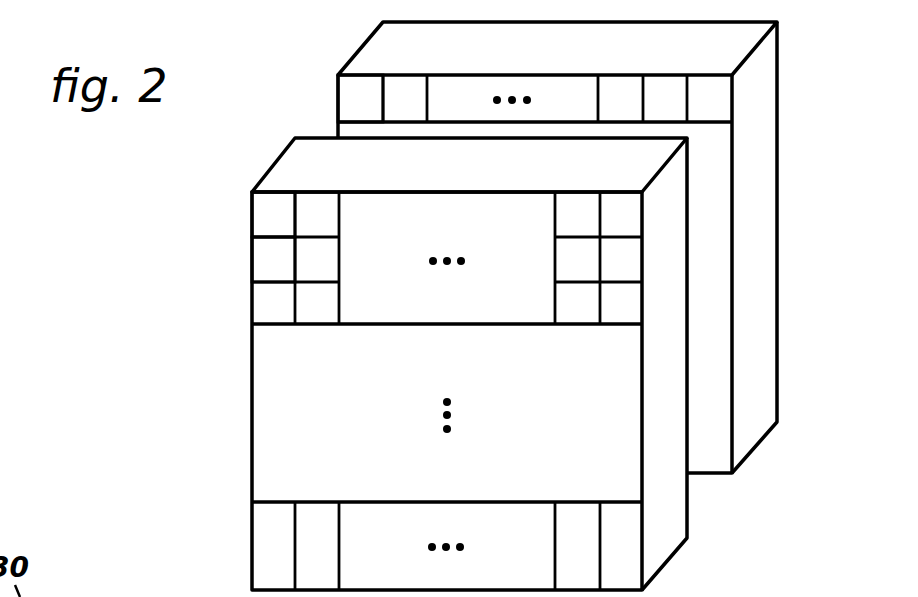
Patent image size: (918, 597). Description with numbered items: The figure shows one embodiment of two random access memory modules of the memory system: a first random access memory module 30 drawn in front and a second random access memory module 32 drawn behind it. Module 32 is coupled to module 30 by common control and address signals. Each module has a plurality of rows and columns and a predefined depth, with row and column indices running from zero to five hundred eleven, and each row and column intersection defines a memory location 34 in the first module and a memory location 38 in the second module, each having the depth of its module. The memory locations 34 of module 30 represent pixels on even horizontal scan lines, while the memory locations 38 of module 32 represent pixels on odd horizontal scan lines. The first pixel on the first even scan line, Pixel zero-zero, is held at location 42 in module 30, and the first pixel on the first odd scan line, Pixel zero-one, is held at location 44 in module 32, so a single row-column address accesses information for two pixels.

The first random access memory module 30 is at (236, 444).
The second random access memory module 32 is at (776, 285).
The memory location 34 is at (268, 258).
The memory location 38 is at (663, 99).
The Pixel 0,0 location 42 is at (263, 208).
The Pixel 0,1 location 44 is at (352, 98).